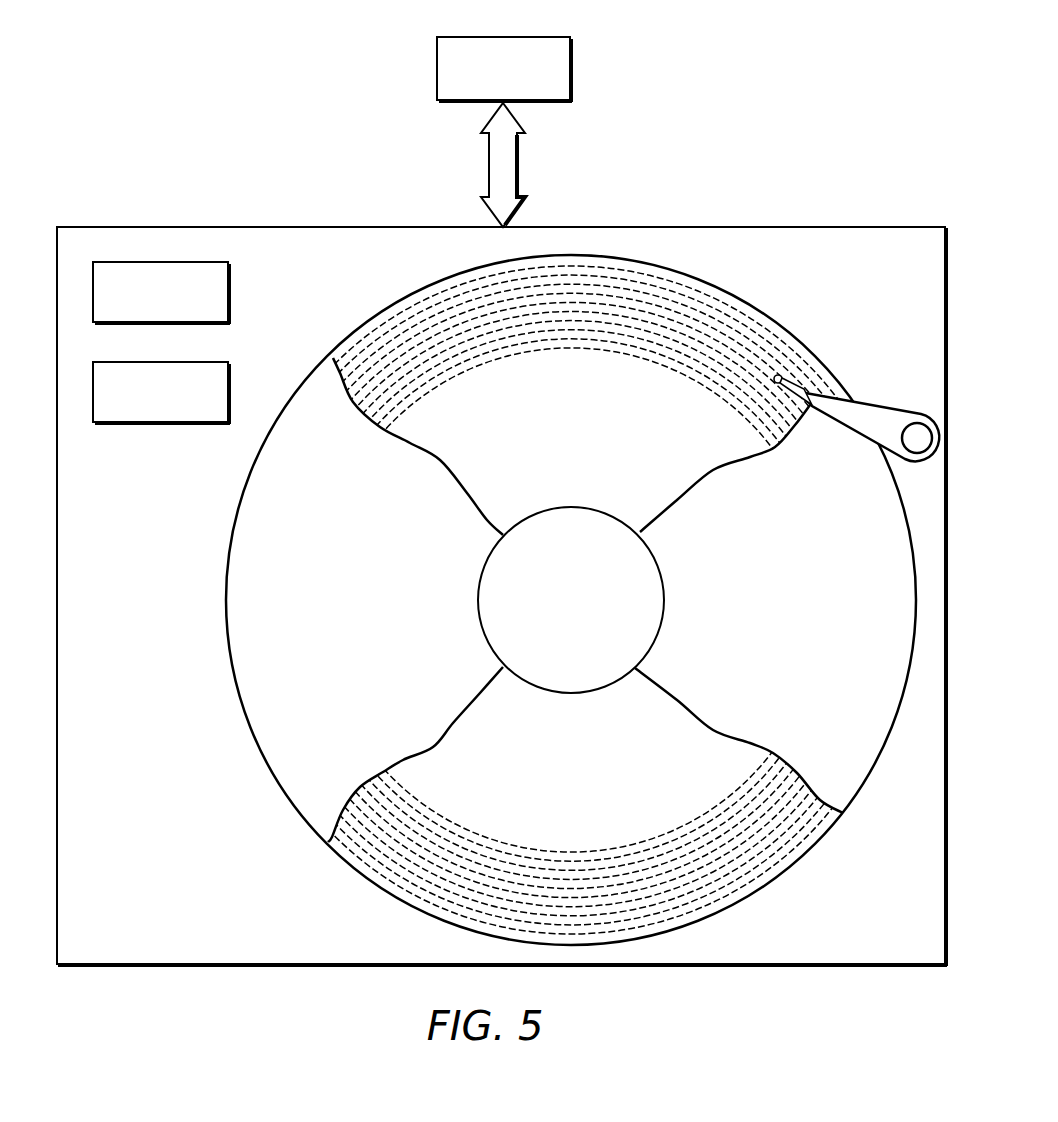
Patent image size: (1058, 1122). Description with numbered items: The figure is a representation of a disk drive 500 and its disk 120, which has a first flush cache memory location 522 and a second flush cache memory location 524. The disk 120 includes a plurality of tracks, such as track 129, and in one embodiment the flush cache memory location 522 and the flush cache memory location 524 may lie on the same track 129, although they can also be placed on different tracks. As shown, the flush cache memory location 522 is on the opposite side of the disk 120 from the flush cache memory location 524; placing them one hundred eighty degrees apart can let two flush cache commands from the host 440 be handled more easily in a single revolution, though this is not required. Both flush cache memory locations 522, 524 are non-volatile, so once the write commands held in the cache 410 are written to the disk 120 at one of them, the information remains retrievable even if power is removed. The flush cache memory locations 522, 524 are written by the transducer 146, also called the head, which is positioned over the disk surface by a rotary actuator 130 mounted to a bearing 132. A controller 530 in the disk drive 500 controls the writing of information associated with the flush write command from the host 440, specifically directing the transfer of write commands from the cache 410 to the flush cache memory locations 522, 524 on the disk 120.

The disk drive 500 is at (785, 143).
The host 440 is at (553, 40).
The controller 530 is at (212, 262).
The cache 410 is at (212, 362).
The disk 120 is at (236, 603).
The track 129 is at (676, 271).
The first flush cache memory location 522 is at (579, 318).
The second flush cache memory location 524 is at (573, 882).
The rotary actuator 130 is at (851, 429).
The bearing 132 is at (912, 414).
The transducer 146 is at (778, 374).